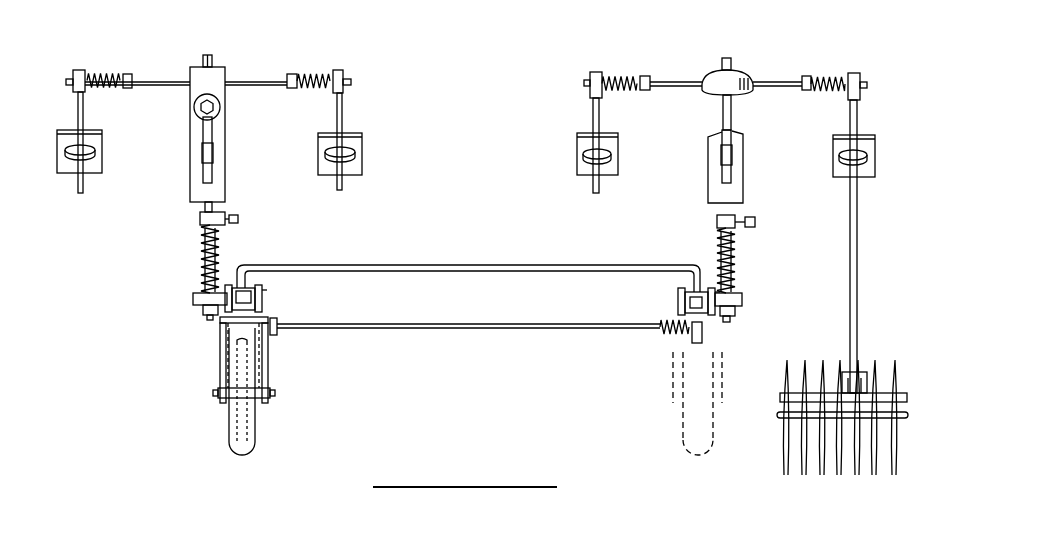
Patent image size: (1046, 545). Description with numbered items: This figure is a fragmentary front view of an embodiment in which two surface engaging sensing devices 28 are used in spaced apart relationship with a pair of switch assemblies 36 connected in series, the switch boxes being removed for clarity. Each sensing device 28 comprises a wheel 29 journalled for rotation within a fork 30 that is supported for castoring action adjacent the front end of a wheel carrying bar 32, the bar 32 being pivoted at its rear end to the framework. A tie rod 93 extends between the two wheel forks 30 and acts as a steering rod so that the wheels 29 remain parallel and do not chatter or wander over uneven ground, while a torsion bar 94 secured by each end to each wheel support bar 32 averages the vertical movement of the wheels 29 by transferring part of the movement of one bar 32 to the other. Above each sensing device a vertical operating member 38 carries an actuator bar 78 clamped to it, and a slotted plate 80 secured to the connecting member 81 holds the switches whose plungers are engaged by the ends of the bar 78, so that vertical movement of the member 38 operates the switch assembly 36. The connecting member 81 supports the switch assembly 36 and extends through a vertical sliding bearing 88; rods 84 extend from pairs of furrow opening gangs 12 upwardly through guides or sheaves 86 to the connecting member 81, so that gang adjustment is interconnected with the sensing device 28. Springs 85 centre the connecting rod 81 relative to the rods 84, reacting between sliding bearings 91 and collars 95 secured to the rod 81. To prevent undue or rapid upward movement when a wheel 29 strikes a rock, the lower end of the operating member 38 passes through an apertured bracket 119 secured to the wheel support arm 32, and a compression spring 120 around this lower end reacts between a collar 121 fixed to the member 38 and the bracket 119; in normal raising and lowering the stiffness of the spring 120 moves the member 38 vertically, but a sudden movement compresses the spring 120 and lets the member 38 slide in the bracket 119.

The gang 12 is at (832, 338).
The surface engaging sensing device 28 is at (204, 414).
The wheel 29 is at (243, 418).
The fork 30 is at (268, 365).
The wheel carrying bar 32 is at (262, 296).
The switch assembly 36 is at (261, 205).
The operating member 38 is at (212, 56).
The actuator bar 78 is at (210, 153).
The slotted plate 80 is at (215, 129).
The connecting member 81 is at (167, 86).
The rod 84 is at (80, 126).
The spring 85 is at (103, 75).
The guide or sheave 86 is at (92, 147).
The vertical sliding bearing 88 is at (717, 70).
The sliding bearing 91 is at (76, 70).
The tie rod 93 is at (531, 323).
The torsion bar 94 is at (470, 273).
The collar 95 is at (128, 73).
The apertured bracket 119 is at (196, 299).
The compression spring 120 is at (200, 256).
The collar 121 is at (200, 218).